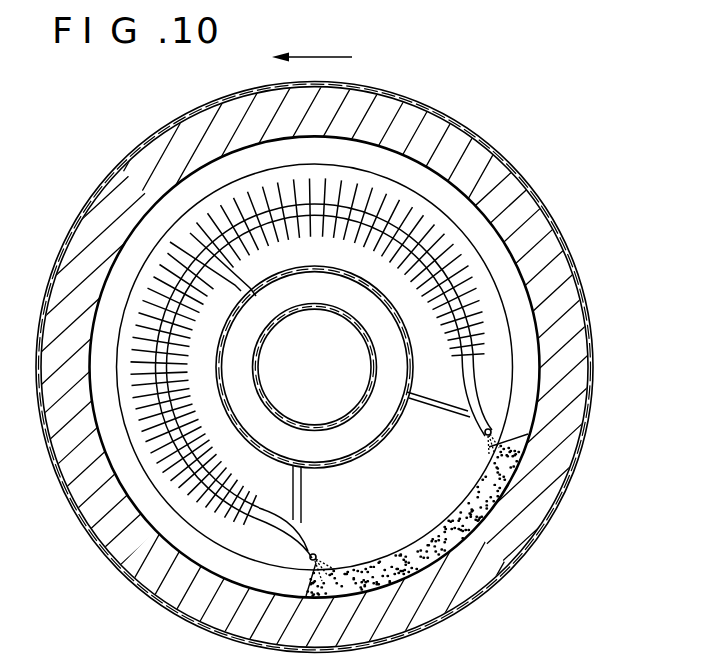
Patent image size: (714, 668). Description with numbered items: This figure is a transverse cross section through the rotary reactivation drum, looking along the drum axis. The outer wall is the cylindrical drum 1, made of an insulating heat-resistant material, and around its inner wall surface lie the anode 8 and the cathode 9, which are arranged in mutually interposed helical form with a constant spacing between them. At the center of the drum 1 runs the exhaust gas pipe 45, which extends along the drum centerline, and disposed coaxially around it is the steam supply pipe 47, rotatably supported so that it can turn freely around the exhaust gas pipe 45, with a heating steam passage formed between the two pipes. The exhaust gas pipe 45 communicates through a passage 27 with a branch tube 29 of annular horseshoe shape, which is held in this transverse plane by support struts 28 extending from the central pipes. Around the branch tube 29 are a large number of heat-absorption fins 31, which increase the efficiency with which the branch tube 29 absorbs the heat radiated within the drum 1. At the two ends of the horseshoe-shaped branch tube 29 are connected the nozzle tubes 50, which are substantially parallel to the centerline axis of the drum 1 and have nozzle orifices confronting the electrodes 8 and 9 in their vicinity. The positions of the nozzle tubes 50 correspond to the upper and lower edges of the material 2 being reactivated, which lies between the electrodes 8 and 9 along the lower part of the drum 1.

The cylindrical drum 1 is at (455, 148).
The material to be reactivated 2 is at (445, 513).
The anode 8 is at (524, 351).
The cathode 9 is at (315, 366).
The passage 27 is at (248, 293).
The support strut 28 is at (422, 404).
The branch tube 29 is at (523, 189).
The heat-absorption fin 31 is at (193, 426).
The exhaust gas pipe 45 is at (345, 421).
The steam supply pipe 47 is at (367, 451).
The nozzle tube 50 is at (486, 434).